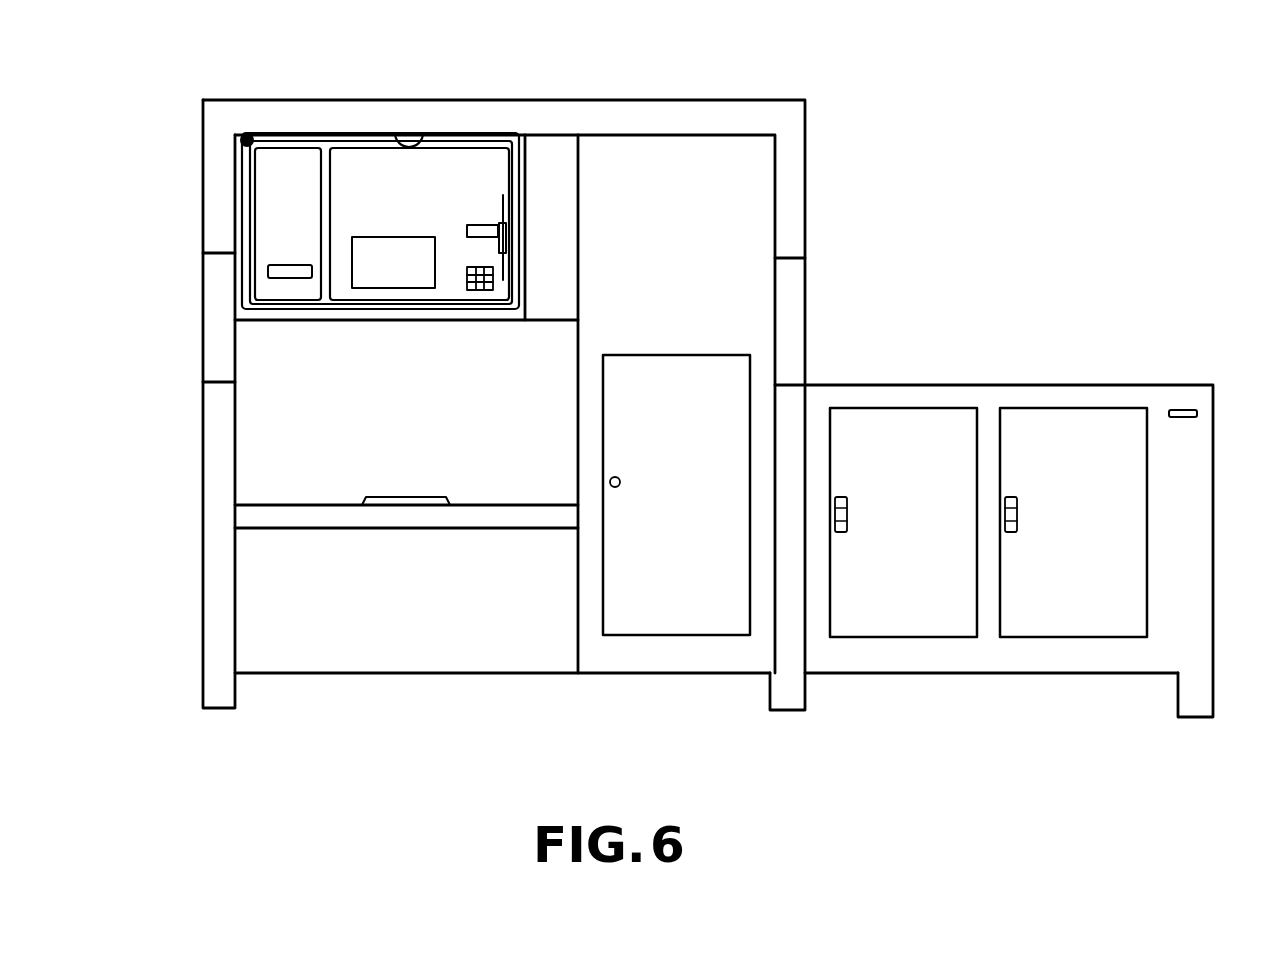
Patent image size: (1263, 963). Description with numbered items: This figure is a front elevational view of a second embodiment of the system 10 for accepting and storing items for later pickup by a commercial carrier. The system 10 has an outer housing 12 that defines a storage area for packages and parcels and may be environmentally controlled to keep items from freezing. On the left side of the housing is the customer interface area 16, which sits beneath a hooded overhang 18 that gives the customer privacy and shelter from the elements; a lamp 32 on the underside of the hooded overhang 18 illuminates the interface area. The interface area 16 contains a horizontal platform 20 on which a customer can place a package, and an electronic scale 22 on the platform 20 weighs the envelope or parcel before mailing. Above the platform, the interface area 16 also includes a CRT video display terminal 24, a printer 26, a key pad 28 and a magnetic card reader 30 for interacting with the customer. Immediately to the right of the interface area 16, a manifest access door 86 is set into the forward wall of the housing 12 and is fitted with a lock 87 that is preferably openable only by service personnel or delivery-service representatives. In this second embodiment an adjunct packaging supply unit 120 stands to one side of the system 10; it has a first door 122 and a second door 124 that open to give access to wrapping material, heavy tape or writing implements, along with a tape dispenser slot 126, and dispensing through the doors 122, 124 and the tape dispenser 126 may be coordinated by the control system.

The system 10 is at (633, 88).
The outer housing 12 is at (199, 320).
The customer interface area 16 is at (559, 170).
The hooded overhang 18 is at (428, 148).
The horizontal platform 20 is at (527, 504).
The electronic scale 22 is at (410, 496).
The CRT video display terminal 24 is at (411, 277).
The printer 26 is at (308, 265).
The key pad 28 is at (478, 292).
The magnetic card reader 30 is at (498, 225).
The lamp 32 is at (252, 147).
The manifest access door 86 is at (648, 407).
The lock 87 is at (619, 477).
The adjunct packaging supply unit 120 is at (938, 379).
The first door 122 is at (919, 463).
The second door 124 is at (1080, 463).
The tape dispenser slot 126 is at (1180, 409).